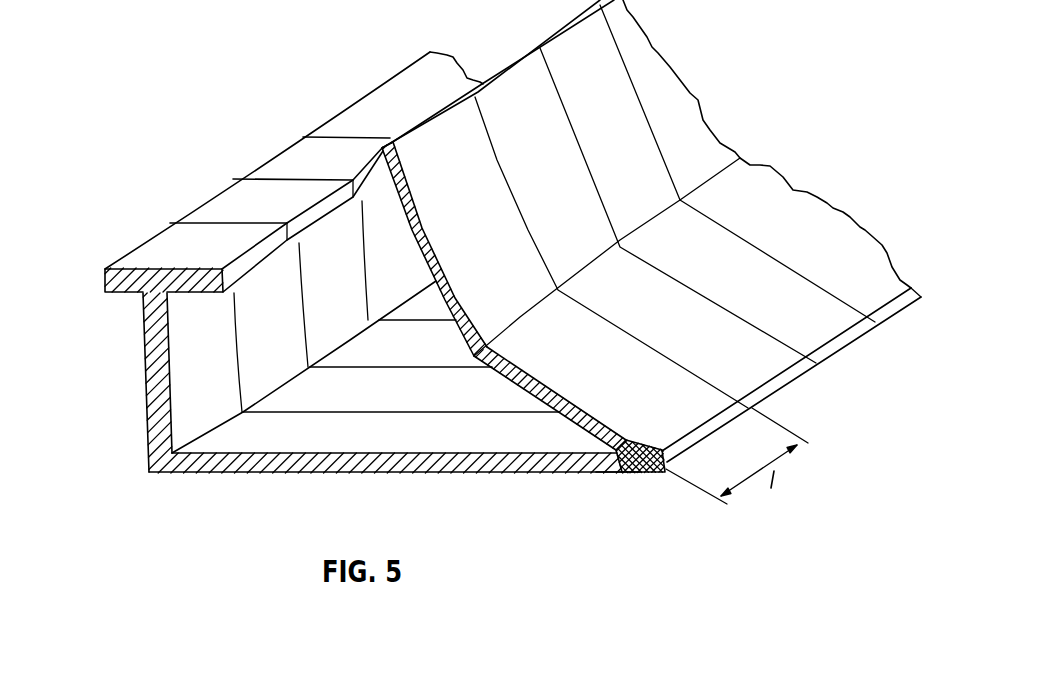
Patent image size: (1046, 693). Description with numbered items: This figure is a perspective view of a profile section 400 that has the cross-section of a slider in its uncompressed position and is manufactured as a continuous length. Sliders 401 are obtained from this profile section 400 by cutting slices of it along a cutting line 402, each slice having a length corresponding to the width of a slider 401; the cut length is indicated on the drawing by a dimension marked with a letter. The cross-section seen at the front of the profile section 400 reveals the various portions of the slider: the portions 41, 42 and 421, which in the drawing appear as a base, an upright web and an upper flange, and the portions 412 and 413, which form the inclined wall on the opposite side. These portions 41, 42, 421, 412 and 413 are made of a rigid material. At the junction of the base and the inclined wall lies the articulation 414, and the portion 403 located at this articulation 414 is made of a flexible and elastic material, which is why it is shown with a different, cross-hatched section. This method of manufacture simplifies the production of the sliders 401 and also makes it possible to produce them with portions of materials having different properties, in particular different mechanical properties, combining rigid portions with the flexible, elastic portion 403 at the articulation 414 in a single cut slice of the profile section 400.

The profile section 400 is at (727, 109).
The slider 401 is at (433, 355).
The cutting line 402 is at (848, 308).
The portion at the articulation 403 is at (627, 474).
The portion of the slider 41 is at (262, 460).
The portion of the slider 42 is at (163, 375).
The portion of the slider 421 is at (106, 278).
The portion of the slider 412 is at (608, 431).
The portion of the slider 413 is at (421, 232).
The articulation 414 is at (661, 474).